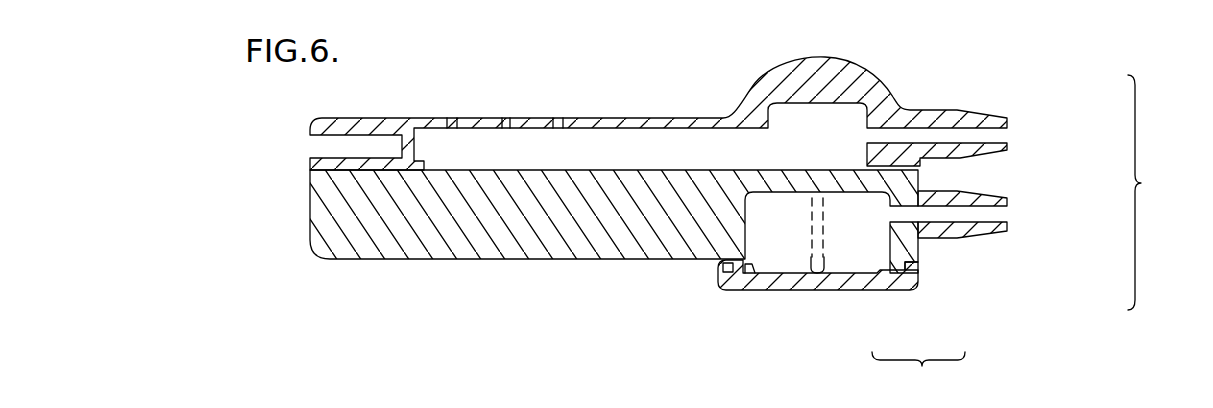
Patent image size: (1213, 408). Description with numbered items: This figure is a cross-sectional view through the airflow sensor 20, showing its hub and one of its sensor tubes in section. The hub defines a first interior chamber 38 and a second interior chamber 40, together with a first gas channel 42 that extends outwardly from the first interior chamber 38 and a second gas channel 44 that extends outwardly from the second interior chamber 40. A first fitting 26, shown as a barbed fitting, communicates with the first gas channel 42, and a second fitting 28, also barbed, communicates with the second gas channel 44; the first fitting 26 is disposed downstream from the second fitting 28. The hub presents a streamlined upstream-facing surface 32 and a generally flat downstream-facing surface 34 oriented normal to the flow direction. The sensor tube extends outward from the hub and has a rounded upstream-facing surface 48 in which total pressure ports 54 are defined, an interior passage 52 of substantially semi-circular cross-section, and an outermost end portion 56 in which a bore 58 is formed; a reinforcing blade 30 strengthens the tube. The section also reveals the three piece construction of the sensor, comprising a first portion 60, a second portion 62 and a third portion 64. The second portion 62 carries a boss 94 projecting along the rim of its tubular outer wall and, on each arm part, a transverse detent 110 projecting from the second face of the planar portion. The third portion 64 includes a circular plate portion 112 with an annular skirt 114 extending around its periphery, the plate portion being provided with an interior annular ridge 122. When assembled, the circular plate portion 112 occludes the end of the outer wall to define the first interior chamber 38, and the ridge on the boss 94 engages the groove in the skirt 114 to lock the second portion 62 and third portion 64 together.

The airflow sensor 20 is at (1152, 192).
The first fitting 26 is at (990, 191).
The second fitting 28 is at (935, 110).
The reinforcing blade 30 is at (403, 240).
The upstream-facing surface 32 is at (770, 67).
The downstream-facing surface 34 is at (787, 291).
The first interior chamber 38 is at (863, 259).
The second interior chamber 40 is at (800, 162).
The first gas channel 42 is at (892, 212).
The second gas channel 44 is at (880, 130).
The upstream-facing surface 48 is at (612, 117).
The interior passage 52 is at (594, 162).
The total pressure port 54 is at (450, 108).
The outermost end portion 56 is at (306, 111).
The bore 58 is at (316, 147).
The first portion 60 is at (1016, 104).
The second portion 62 is at (1035, 258).
The third portion 64 is at (934, 284).
The boss 94 is at (867, 276).
The transverse detent 110 is at (422, 152).
The circular plate portion 112 is at (885, 290).
The annular skirt 114 is at (918, 289).
The interior annular ridge 122 is at (750, 268).